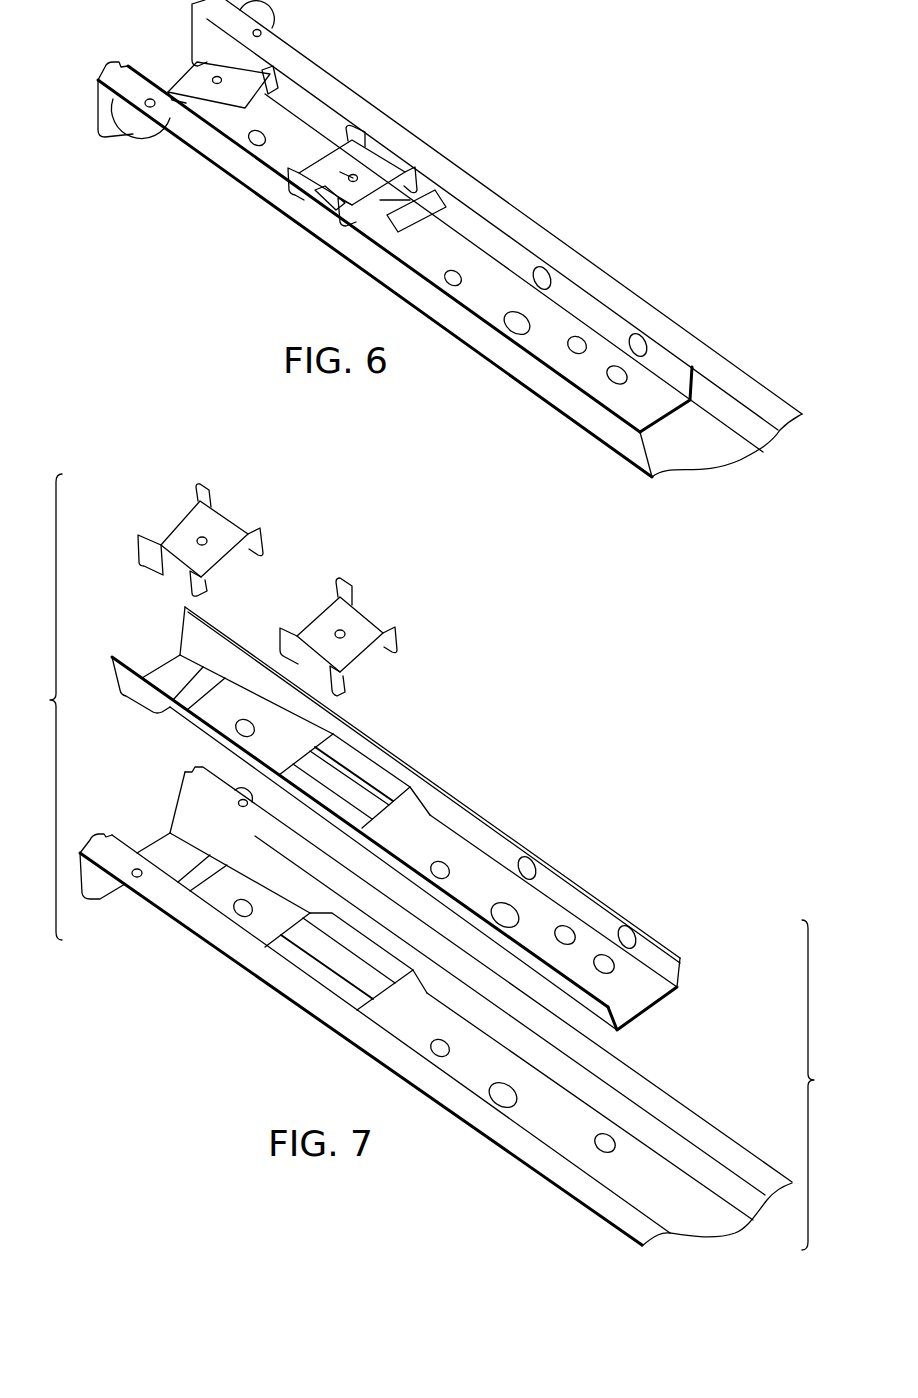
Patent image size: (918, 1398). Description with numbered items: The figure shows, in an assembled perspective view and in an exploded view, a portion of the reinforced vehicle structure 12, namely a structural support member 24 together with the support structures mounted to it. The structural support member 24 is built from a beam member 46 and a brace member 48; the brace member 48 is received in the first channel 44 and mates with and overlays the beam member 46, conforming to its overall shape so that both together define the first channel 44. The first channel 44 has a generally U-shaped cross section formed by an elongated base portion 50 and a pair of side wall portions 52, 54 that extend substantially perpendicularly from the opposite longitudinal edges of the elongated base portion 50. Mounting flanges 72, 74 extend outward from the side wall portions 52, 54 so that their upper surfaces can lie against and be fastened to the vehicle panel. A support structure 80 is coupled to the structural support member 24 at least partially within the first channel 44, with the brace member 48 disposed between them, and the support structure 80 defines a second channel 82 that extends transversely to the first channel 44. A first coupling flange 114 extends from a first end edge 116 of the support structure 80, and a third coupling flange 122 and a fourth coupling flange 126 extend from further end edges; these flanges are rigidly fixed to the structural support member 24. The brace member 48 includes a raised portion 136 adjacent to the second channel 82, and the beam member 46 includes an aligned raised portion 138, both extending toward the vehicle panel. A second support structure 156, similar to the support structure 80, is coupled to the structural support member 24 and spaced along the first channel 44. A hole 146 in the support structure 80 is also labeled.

In FIG. 6, the reinforced vehicle structure 12 is at (596, 217).
In FIG. 7, the reinforced vehicle structure 12 is at (41, 707).
In FIG. 6, the structural support member 24 is at (707, 334).
In FIG. 7, the structural support member 24 is at (822, 1085).
In FIG. 6, the first channel 44 is at (144, 40).
In FIG. 6, the beam member 46 is at (606, 451).
In FIG. 7, the beam member 46 is at (521, 1169).
In FIG. 6, the brace member 48 is at (680, 419).
In FIG. 7, the brace member 48 is at (663, 1012).
In FIG. 6, the elongated base portion 50 is at (654, 392).
In FIG. 6, the side wall portion 52 is at (612, 376).
In FIG. 6, the side wall portion 54 is at (600, 321).
In FIG. 6, the mounting flange 72 is at (521, 361).
In FIG. 7, the mounting flange 72 is at (200, 916).
In FIG. 6, the mounting flange 74 is at (768, 396).
In FIG. 7, the mounting flange 74 is at (698, 1122).
In FIG. 6, the support structure 80 is at (398, 139).
In FIG. 7, the support structure 80 is at (386, 610).
In FIG. 6, the second channel 82 is at (329, 209).
In FIG. 6, the first coupling flange 114 is at (411, 177).
In FIG. 7, the first coupling flange 114 is at (396, 650).
In FIG. 6, the first end edge 116 is at (356, 136).
In FIG. 7, the first end edge 116 is at (342, 600).
In FIG. 6, the third coupling flange 122 is at (354, 225).
In FIG. 7, the third coupling flange 122 is at (342, 691).
In FIG. 6, the fourth coupling flange 126 is at (300, 190).
In FIG. 7, the fourth coupling flange 126 is at (283, 640).
In FIG. 6, the raised portion 136 is at (411, 200).
In FIG. 7, the raised portion 136 is at (377, 778).
In FIG. 7, the raised portion 138 is at (325, 978).
In FIG. 6, the clip hole 146 is at (349, 176).
In FIG. 6, the second support structure 156 is at (256, 50).
In FIG. 7, the second support structure 156 is at (246, 506).